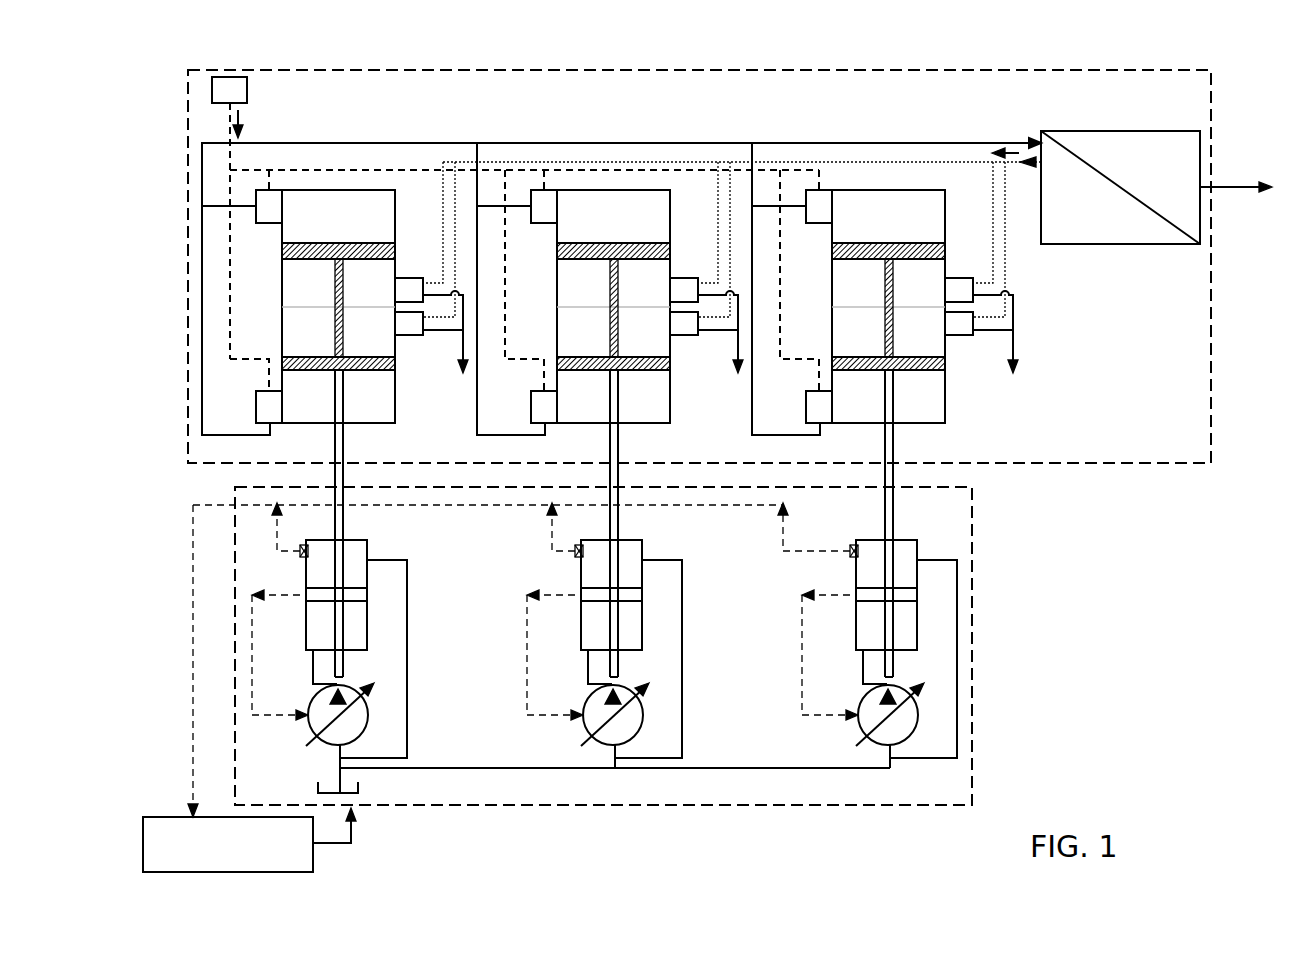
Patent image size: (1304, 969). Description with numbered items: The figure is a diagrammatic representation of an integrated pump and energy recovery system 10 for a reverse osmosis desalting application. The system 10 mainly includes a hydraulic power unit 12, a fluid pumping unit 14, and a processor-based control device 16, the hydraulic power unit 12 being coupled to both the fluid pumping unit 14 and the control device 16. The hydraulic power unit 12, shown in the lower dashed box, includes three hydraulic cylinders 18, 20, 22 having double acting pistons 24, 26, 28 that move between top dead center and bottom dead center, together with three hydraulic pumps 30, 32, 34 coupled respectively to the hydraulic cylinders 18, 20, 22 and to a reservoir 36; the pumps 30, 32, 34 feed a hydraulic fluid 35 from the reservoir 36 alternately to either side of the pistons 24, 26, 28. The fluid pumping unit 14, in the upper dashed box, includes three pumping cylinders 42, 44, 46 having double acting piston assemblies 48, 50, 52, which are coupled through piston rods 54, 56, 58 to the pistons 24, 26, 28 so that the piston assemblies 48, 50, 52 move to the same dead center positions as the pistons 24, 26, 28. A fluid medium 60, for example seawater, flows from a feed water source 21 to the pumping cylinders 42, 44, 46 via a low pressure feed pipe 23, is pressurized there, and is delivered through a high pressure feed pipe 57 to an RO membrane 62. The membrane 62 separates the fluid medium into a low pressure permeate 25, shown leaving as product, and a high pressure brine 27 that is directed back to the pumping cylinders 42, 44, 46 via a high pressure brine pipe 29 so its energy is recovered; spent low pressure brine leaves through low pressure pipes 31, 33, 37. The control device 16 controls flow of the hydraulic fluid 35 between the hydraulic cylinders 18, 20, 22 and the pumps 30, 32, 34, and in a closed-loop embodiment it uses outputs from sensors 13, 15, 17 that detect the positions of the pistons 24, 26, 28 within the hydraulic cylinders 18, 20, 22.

The integrated pump and energy recovery system 10 is at (1122, 765).
The hydraulic power unit 12 is at (972, 505).
The sensor 13 is at (300, 545).
The fluid pumping unit 14 is at (188, 310).
The sensor 15 is at (575, 545).
The processor-based control device 16 is at (172, 817).
The sensor 17 is at (850, 545).
The hydraulic cylinder 18 is at (368, 548).
The hydraulic cylinder 20 is at (643, 548).
The feed water source 21 is at (212, 100).
The hydraulic cylinder 22 is at (918, 548).
The low pressure feed pipe 23 is at (228, 187).
The piston 24 is at (355, 600).
The low-solute permeate 25 is at (1246, 198).
The piston 26 is at (630, 600).
The high-solute brine 27 is at (1017, 153).
The piston 28 is at (905, 600).
The high pressure brine pipe 29 is at (990, 160).
The hydraulic pump 30 is at (355, 742).
The low pressure pipe 31 is at (461, 366).
The hydraulic pump 32 is at (630, 742).
The low pressure pipe 33 is at (736, 366).
The hydraulic pump 34 is at (905, 742).
The hydraulic fluid 35 is at (408, 582).
The reservoir 36 is at (360, 786).
The low pressure pipe 37 is at (1011, 366).
The pumping cylinder 42 is at (282, 289).
The pumping cylinder 44 is at (557, 289).
The pumping cylinder 46 is at (832, 289).
The piston assembly 48 is at (336, 238).
The piston assembly 50 is at (611, 238).
The piston assembly 52 is at (886, 238).
The piston rod 54 is at (344, 398).
The piston rod 56 is at (619, 398).
The high pressure feed pipe 57 is at (202, 260).
The piston rod 58 is at (894, 398).
The fluid medium 60 is at (245, 133).
The RO membrane 62 is at (1082, 246).